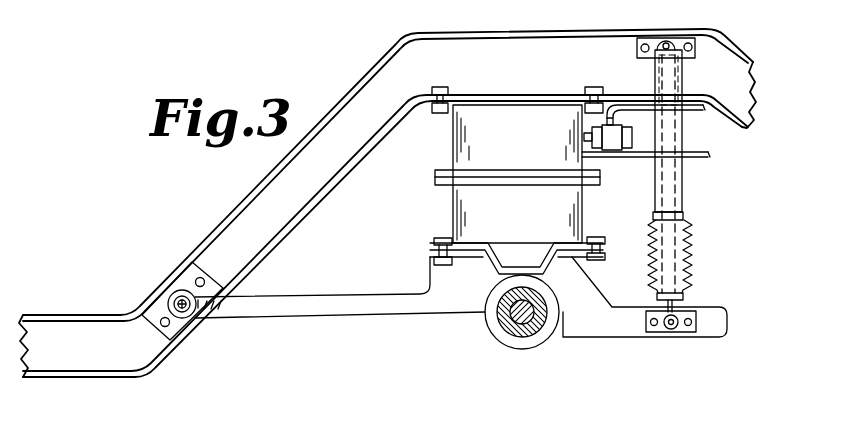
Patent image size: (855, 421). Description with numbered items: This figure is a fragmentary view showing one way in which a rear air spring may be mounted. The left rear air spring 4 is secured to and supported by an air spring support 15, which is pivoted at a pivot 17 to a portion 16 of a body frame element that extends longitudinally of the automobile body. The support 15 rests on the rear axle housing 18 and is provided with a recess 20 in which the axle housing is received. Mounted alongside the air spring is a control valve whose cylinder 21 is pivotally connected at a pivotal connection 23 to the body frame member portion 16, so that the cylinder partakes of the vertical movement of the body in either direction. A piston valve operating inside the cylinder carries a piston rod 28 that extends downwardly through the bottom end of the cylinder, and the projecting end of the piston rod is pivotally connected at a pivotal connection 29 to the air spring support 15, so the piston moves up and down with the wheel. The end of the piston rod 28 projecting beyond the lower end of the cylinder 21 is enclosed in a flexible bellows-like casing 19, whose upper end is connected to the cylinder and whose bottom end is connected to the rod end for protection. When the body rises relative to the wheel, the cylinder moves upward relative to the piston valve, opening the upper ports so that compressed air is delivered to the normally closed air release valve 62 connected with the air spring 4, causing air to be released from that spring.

The left rear air spring 4 is at (453, 146).
The air spring support 15 is at (412, 303).
The body frame element portion 16 is at (338, 98).
The pivot 17 is at (186, 312).
The rear axle housing 18 is at (500, 342).
The flexible bellows-like casing 19 is at (690, 265).
The recess 20 is at (563, 317).
The cylinder 21 is at (680, 82).
The pivotal connection 23 is at (640, 59).
The piston rod 28 is at (676, 243).
The pivotal connection 29 is at (660, 338).
The air release valve 62 is at (614, 150).